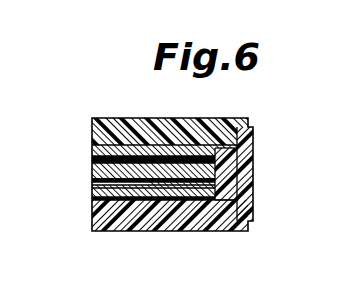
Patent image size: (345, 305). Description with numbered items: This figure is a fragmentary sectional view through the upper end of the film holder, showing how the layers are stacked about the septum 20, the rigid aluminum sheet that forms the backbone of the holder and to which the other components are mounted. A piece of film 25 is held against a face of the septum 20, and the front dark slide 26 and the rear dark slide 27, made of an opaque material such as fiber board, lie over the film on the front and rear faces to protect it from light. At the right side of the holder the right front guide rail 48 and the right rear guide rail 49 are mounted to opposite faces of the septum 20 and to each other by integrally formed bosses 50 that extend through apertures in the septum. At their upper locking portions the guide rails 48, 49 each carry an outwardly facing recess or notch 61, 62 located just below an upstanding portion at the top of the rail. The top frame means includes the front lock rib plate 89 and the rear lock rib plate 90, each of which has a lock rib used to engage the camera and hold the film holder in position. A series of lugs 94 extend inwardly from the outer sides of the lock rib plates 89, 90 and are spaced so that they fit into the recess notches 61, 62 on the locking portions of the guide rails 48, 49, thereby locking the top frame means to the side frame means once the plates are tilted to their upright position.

The septum 20 is at (92, 176).
The film 25 is at (92, 160).
The front dark slide 26 is at (92, 222).
The rear dark slide 27 is at (92, 143).
The right front guide rail 48 is at (188, 232).
The right rear guide rail 49 is at (213, 127).
The bosses 50 is at (193, 125).
The recess or notch 61 is at (222, 232).
The recess or notch 62 is at (253, 133).
The front lock rib plate 89 is at (120, 232).
The rear lock rib plate 90 is at (116, 133).
The lugs 94 is at (253, 152).